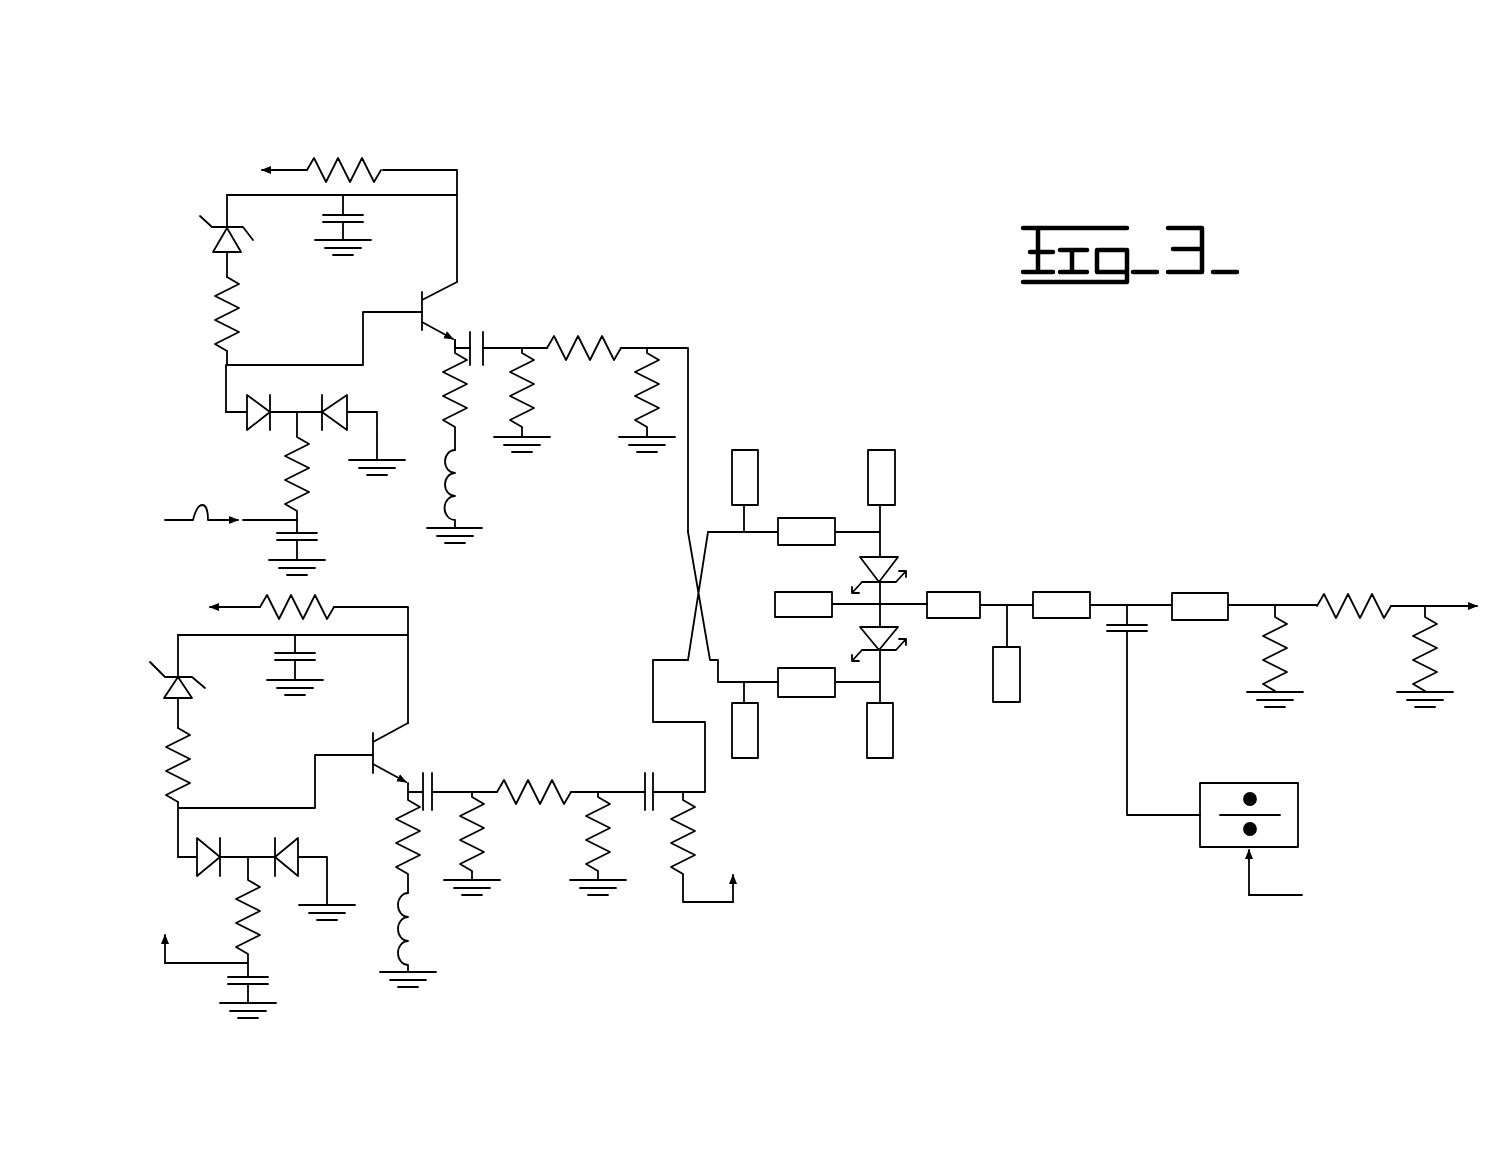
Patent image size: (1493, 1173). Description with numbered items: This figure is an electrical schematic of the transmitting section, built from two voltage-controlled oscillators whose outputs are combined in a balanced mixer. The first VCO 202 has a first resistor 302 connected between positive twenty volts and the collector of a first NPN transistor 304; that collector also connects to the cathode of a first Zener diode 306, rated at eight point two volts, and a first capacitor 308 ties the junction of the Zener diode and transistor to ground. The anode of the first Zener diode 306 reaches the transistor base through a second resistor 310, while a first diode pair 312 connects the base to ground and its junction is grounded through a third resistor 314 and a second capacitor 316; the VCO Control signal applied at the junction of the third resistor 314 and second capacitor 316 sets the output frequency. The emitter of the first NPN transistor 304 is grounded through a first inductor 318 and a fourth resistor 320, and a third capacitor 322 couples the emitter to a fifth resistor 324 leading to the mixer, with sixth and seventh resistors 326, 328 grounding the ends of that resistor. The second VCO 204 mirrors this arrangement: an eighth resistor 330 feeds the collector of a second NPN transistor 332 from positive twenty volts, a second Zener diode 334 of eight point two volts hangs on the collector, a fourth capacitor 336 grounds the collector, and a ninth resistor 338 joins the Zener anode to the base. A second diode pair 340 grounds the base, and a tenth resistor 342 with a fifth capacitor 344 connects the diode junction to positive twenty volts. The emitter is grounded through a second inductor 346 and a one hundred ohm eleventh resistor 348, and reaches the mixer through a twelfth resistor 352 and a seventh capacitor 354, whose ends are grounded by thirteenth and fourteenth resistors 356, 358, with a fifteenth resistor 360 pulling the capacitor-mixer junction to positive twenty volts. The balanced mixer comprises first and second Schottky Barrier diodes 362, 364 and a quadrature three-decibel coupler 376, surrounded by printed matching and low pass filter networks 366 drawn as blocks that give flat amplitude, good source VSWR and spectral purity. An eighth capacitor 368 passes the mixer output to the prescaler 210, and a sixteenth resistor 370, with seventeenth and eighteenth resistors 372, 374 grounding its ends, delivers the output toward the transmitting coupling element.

The first VCO 202 is at (565, 268).
The second VCO 204 is at (547, 914).
The prescaler 210 is at (1233, 848).
The first resistor 302 is at (383, 168).
The first NPN transistor 304 is at (460, 268).
The first Zener diode 306 is at (228, 222).
The first capacitor 308 is at (347, 203).
The second resistor 310 is at (232, 278).
The first diode pair 312 is at (330, 385).
The third resistor 314 is at (300, 512).
The second capacitor 316 is at (300, 548).
The first inductor 318 is at (458, 494).
The fourth resistor 320 is at (445, 372).
The third capacitor 322 is at (497, 347).
The fifth resistor 324 is at (618, 347).
The resistor 326 is at (528, 402).
The resistor 328 is at (637, 410).
The eighth resistor 330 is at (334, 605).
The second NPN transistor 332 is at (412, 722).
The second Zener diode 334 is at (182, 664).
The fourth capacitor 336 is at (300, 667).
The resistor 338 is at (183, 724).
The second diode pair 340 is at (284, 830).
The tenth resistor 342 is at (252, 944).
The fifth capacitor 344 is at (252, 990).
The second inductor 346 is at (418, 940).
The eleventh resistor 348 is at (405, 808).
The twelfth resistor 352 is at (500, 785).
The seventh capacitor 354 is at (622, 787).
The thirteenth resistor 356 is at (480, 848).
The fourteenth resistor 358 is at (590, 857).
The fifteenth resistor 360 is at (694, 830).
The first Schottky Barrier diode 362 is at (900, 552).
The second Schottky Barrier diode 364 is at (898, 655).
The printed matching and low pass filter networks 366 is at (822, 725).
The eighth capacitor 368 is at (1128, 647).
The sixteenth resistor 370 is at (1303, 605).
The seventeenth resistor 372 is at (1283, 663).
The eighteenth resistor 374 is at (1423, 663).
The quadrature 3 db coupler 376 is at (668, 603).